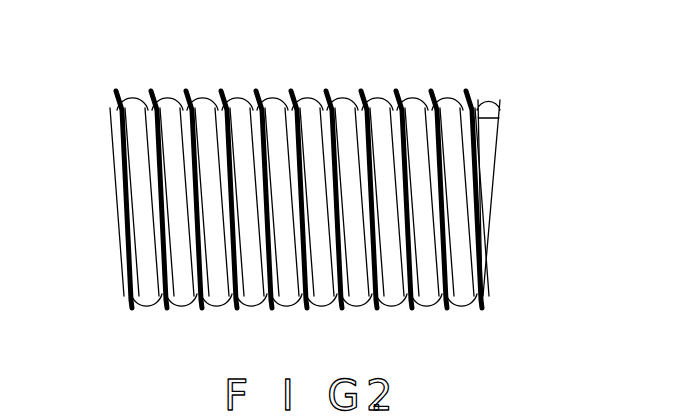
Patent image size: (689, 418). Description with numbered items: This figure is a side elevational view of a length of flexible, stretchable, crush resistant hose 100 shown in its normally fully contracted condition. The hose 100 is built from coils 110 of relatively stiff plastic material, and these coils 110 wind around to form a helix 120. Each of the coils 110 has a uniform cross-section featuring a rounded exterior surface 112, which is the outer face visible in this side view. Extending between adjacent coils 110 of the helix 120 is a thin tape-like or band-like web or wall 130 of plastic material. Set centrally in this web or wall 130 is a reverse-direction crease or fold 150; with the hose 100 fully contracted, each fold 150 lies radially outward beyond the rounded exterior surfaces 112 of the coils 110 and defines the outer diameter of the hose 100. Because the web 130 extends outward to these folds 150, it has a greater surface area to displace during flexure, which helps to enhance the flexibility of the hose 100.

The hose 100 is at (329, 179).
The coils 110 is at (192, 78).
The rounded exterior surface 112 is at (322, 312).
The helix 120 is at (514, 93).
The web or wall 130 is at (266, 50).
The reverse-direction crease or fold 150 is at (117, 92).